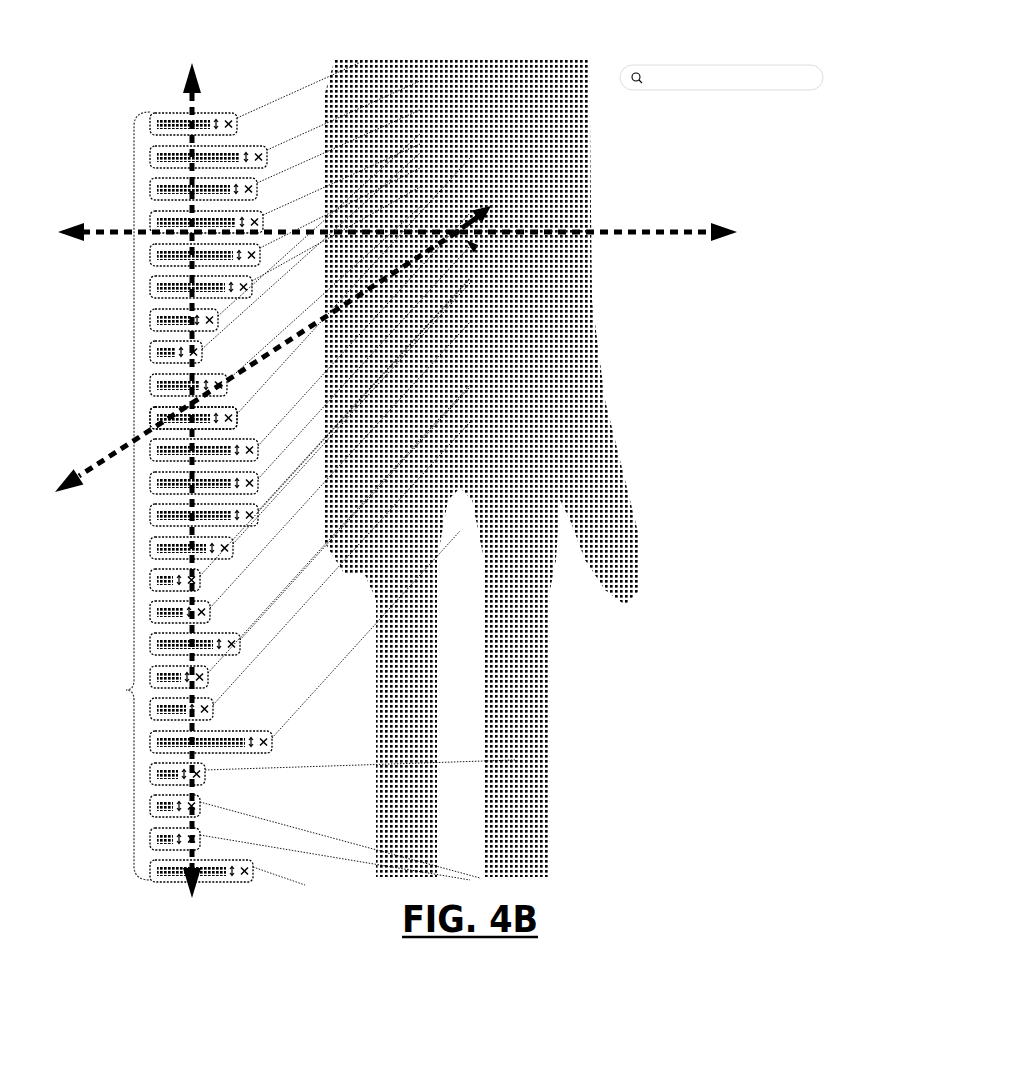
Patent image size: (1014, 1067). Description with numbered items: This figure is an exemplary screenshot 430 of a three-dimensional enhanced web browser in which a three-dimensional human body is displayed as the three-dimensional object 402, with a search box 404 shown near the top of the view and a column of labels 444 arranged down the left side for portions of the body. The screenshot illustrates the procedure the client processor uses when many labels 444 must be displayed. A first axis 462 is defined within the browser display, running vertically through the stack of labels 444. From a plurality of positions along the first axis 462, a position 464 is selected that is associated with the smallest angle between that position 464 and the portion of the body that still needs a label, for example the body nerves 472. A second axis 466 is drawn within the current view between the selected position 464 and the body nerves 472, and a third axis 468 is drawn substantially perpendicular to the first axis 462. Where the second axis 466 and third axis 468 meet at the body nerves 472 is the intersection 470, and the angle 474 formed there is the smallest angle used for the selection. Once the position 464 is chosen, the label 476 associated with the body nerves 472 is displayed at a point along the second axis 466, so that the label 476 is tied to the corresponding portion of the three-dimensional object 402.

The 3D object 402 is at (658, 263).
The search box 404 is at (612, 66).
The screenshot 430 is at (814, 899).
The labels 444 is at (126, 690).
The first axis 462 is at (193, 471).
The position 464 is at (216, 420).
The second axis 466 is at (237, 369).
The third axis 468 is at (414, 232).
The intersection 470 is at (456, 214).
The body nerves 472 is at (481, 248).
The angle 474 is at (411, 243).
The label 476 is at (139, 417).